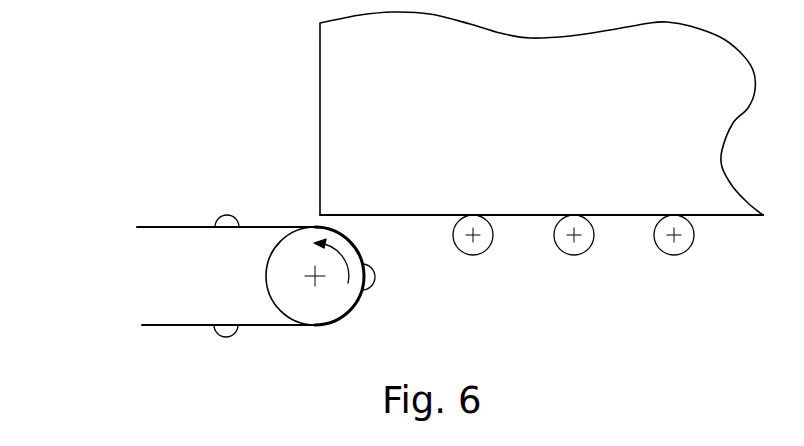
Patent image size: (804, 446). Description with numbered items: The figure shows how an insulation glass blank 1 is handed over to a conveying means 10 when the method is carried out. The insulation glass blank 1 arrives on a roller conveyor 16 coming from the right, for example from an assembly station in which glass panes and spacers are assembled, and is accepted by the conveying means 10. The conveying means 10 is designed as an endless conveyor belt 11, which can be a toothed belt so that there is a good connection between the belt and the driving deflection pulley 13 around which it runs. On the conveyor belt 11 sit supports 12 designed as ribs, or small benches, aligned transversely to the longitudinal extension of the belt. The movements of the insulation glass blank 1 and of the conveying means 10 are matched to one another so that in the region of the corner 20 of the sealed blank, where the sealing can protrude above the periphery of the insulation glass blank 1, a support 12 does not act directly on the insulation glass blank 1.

The insulation glass blank 1 is at (357, 62).
The conveying means 10 is at (108, 202).
The conveyor belt 11 is at (170, 227).
The supports 12 is at (226, 216).
The driving deflection pulley 13 is at (340, 292).
The roller conveyor 16 is at (595, 258).
The corner 20 is at (322, 213).